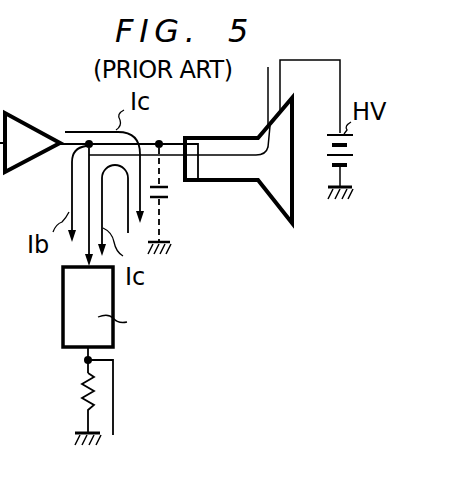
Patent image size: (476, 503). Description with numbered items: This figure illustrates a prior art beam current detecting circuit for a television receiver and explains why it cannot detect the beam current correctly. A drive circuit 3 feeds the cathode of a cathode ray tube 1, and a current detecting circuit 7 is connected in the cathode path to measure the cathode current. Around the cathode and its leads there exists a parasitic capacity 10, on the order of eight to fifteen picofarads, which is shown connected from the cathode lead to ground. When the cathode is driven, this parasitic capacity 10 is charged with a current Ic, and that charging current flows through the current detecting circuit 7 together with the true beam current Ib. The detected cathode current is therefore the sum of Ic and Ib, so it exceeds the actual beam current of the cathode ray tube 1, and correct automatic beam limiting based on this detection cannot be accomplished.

The cathode ray tube 1 is at (264, 190).
The drive circuit 3 is at (34, 170).
The current detecting circuit 7 is at (63, 316).
The parasitic capacity 10 is at (168, 199).